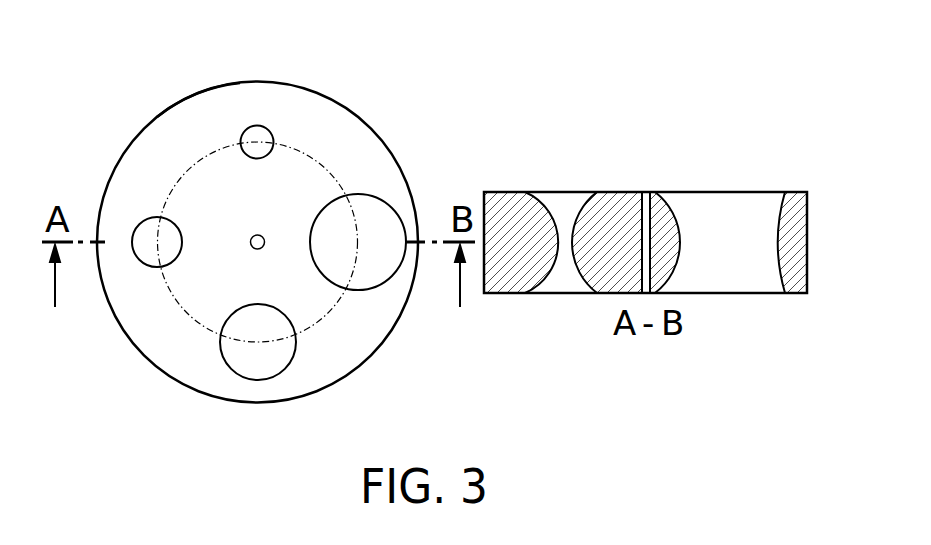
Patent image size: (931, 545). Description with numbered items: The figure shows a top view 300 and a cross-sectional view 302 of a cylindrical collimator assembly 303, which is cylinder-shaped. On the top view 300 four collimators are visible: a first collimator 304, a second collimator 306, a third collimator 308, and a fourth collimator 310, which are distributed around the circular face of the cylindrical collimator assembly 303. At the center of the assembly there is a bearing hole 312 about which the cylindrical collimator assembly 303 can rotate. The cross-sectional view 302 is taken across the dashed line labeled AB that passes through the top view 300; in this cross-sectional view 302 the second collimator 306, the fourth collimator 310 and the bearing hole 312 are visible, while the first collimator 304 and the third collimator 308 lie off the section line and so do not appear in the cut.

The top view 300 is at (368, 112).
The cross-sectional view 302 is at (790, 163).
The cylindrical collimator assembly 303 is at (157, 117).
The first collimator 304 is at (255, 133).
The second collimator 306 is at (145, 232).
The third collimator 308 is at (263, 367).
The fourth collimator 310 is at (382, 217).
The bearing hole 312 is at (250, 244).